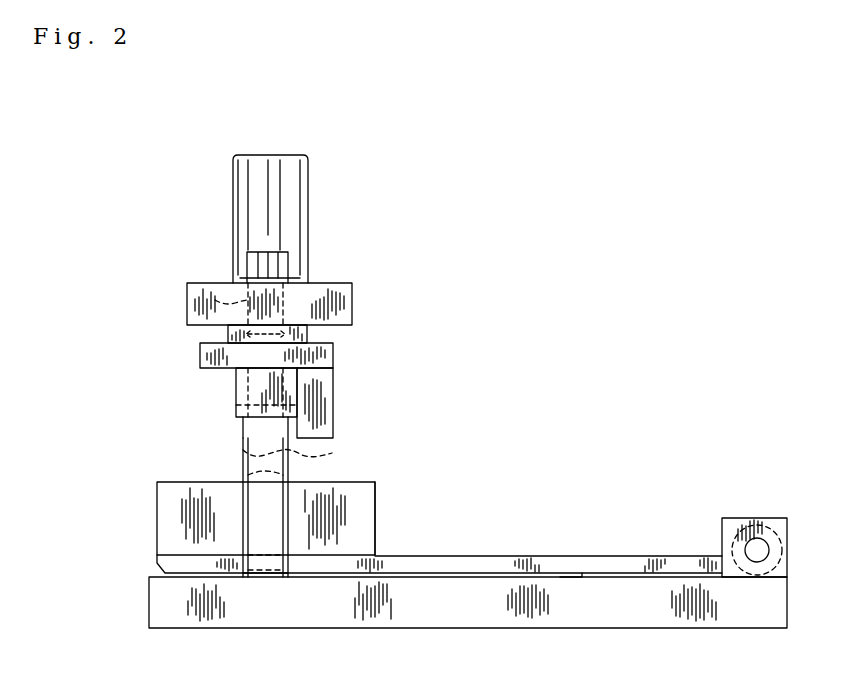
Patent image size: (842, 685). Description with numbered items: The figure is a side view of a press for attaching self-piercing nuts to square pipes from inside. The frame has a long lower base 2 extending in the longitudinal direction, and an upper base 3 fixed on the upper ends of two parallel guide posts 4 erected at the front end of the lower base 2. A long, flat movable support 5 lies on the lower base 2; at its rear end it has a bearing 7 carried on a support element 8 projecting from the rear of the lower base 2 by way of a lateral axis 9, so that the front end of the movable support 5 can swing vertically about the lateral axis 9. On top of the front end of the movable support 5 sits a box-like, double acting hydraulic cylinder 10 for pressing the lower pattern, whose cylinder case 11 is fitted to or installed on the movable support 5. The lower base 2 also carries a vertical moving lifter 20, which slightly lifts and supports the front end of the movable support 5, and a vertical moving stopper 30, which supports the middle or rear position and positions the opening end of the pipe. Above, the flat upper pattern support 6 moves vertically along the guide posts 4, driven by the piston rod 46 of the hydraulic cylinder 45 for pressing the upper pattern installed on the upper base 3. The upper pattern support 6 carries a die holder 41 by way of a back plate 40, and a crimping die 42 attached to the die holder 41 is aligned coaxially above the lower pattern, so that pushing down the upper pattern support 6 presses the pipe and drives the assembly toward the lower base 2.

The lower base 2 is at (390, 613).
The upper base 3 is at (337, 302).
The guide posts 4 is at (242, 462).
The movable support 5 is at (468, 557).
The upper pattern support 6 is at (323, 355).
The bearing 7 is at (776, 522).
The support element 8 is at (733, 525).
The lateral axis 9 is at (755, 552).
The hydraulic cylinder for pressing the lower pattern 10 is at (383, 518).
The cylinder case 11 is at (183, 493).
The vertical moving lifter 20 is at (333, 578).
The vertical moving stopper 30 is at (567, 582).
The back plate 40 is at (323, 383).
The die holder 41 is at (322, 423).
The crimping die 42 is at (308, 458).
The hydraulic cylinder for pressing the upper pattern 45 is at (245, 180).
The piston rod 46 is at (220, 300).